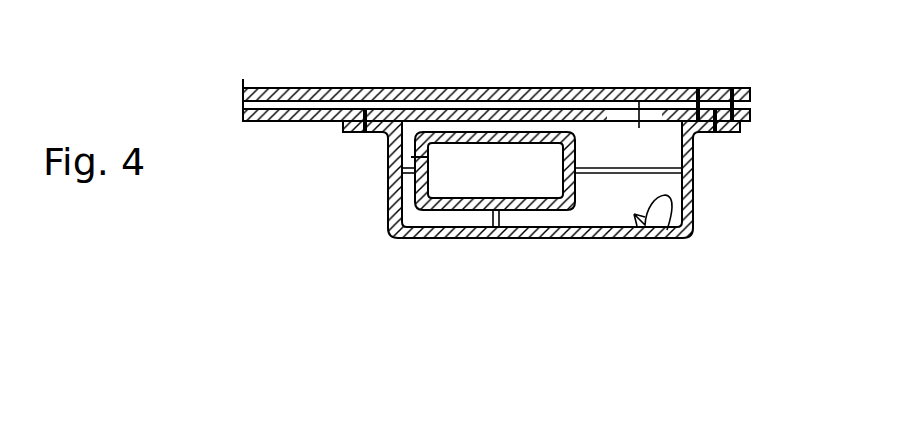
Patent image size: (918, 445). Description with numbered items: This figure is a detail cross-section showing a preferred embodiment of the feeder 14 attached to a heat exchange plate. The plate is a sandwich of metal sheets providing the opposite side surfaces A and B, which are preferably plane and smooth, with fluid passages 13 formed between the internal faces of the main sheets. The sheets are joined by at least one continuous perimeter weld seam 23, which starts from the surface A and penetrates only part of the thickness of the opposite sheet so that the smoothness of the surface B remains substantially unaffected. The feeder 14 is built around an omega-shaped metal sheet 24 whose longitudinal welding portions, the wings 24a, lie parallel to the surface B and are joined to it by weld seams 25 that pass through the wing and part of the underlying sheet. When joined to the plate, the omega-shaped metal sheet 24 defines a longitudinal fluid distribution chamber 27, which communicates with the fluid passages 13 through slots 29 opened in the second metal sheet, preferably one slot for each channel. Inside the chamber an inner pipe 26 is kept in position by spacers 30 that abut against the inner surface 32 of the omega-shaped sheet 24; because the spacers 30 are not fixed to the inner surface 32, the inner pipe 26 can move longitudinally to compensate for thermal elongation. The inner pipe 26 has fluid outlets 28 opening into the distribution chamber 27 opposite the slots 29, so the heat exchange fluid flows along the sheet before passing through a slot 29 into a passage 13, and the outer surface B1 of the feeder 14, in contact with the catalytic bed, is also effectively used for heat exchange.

The passages 13 is at (295, 107).
The slots 29 is at (622, 115).
The perimeter weld seam 23 is at (697, 87).
The omega-shaped metal sheet 24 is at (558, 239).
The wings 24a is at (352, 132).
The weld seams 25 is at (362, 133).
The inner pipe 26 is at (447, 205).
The fluid distribution chamber 27 is at (620, 212).
The fluid outlets 28 is at (433, 153).
The spacers 30 is at (412, 173).
The inner surface 32 is at (667, 230).
The feeder 14 is at (421, 329).
The side surface A is at (521, 77).
The side surface B is at (253, 139).
The outer surface B1 is at (599, 244).